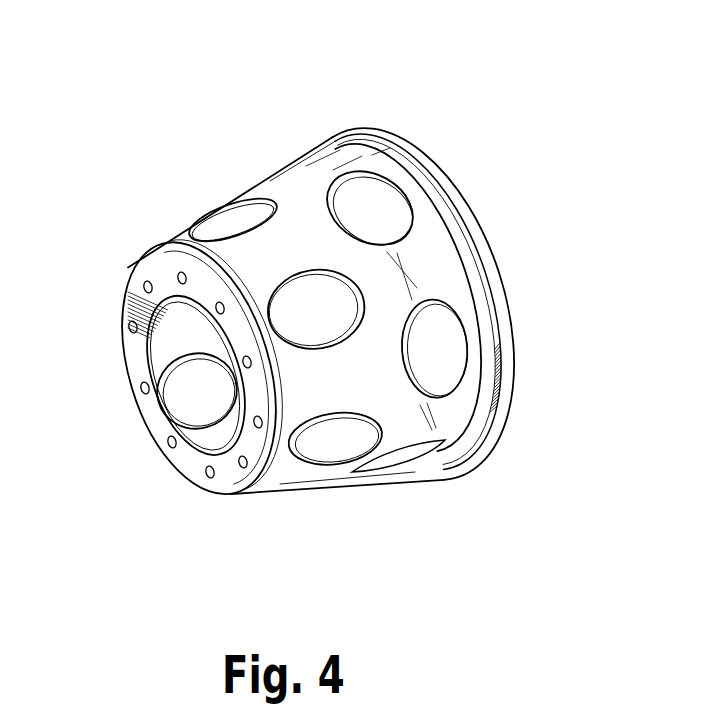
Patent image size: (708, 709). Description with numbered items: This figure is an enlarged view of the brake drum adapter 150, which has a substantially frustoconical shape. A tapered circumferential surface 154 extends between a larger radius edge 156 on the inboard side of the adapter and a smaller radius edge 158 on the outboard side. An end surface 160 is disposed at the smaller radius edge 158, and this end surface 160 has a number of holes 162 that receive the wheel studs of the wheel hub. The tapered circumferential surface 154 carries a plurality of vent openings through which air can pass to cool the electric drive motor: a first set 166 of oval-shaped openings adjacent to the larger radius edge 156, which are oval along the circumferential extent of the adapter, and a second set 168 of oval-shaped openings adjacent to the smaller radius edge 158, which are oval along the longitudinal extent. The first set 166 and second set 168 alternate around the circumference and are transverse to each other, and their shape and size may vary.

The brake drum adapter 150 is at (150, 106).
The tapered circumferential surface 154 is at (307, 230).
The larger radius edge 156 is at (505, 398).
The smaller radius edge 158 is at (255, 492).
The end surface 160 is at (202, 290).
The holes 162 is at (133, 327).
The first set of oval-shaped openings 166 is at (376, 200).
The second set of oval-shaped openings 168 is at (308, 312).